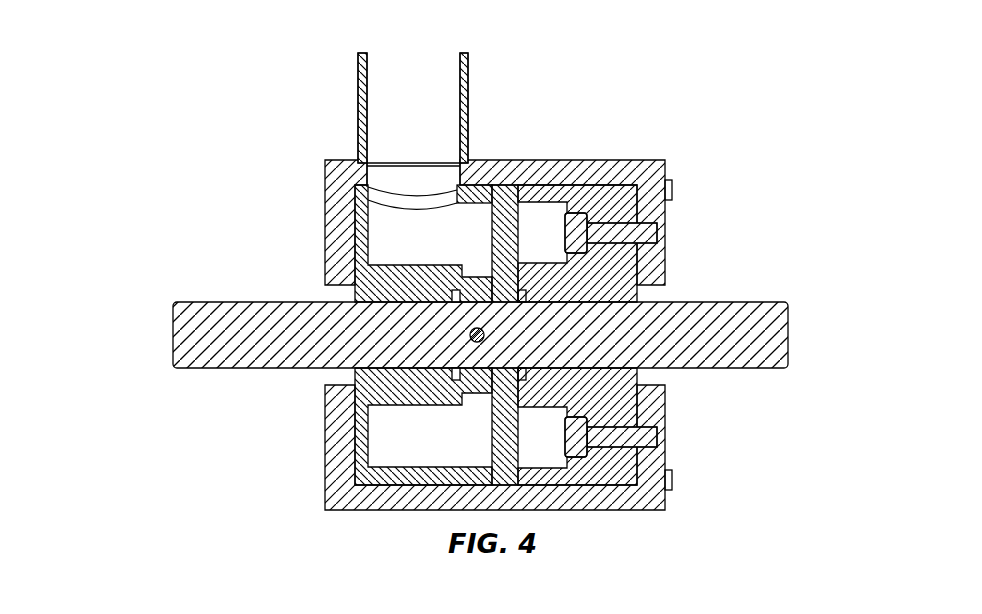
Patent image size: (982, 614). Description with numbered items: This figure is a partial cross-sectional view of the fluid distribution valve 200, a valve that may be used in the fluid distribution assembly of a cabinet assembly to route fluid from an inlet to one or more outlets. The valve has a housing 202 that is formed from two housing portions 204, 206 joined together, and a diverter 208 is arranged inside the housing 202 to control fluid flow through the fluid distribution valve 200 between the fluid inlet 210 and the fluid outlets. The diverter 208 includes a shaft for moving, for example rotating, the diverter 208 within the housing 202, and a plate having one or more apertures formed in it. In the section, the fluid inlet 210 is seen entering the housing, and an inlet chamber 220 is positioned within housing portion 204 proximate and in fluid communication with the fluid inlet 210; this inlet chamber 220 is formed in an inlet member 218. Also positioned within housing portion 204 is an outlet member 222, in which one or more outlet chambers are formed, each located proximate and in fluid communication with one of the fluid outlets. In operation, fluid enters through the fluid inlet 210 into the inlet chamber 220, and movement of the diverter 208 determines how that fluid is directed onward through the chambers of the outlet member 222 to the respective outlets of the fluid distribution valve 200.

The fluid distribution valve 200 is at (205, 32).
The housing 202 is at (520, 180).
The housing portion 204 is at (340, 187).
The housing portion 206 is at (665, 210).
The diverter 208 is at (205, 333).
The fluid inlet 210 is at (370, 95).
The inlet member 218 is at (387, 476).
The inlet chamber 220 is at (392, 238).
The outlet member 222 is at (605, 393).